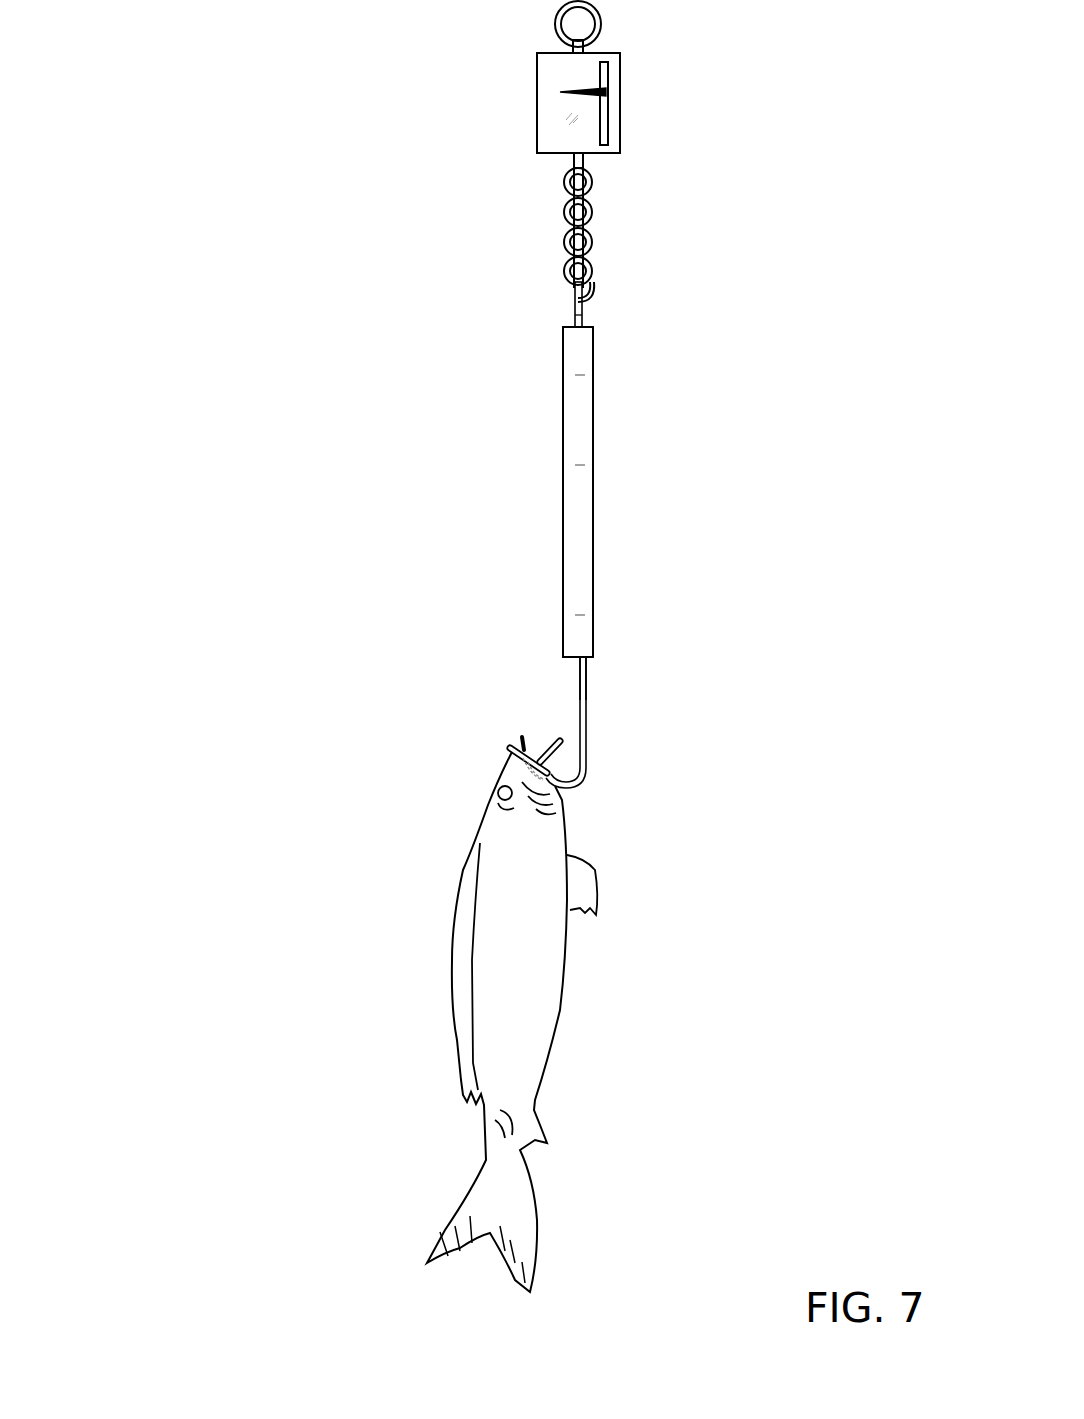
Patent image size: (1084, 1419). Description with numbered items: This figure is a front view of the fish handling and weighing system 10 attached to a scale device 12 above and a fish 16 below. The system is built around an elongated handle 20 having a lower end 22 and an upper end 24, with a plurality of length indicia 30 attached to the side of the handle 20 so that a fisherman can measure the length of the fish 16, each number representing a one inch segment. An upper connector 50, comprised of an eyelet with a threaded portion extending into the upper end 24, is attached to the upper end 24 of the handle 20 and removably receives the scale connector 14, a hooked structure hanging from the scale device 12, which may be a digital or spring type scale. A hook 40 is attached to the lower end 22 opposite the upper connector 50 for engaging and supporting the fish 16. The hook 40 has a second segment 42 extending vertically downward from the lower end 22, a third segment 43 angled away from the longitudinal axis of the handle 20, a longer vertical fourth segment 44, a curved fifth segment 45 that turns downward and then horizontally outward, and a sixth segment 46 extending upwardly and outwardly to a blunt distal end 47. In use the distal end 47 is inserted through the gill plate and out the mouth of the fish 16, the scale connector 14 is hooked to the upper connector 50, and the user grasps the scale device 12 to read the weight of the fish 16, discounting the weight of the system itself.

The fish handling and weighing system 10 is at (240, 397).
The scale device 12 is at (537, 90).
The scale connector 14 is at (566, 284).
The fish 16 is at (553, 992).
The handle 20 is at (563, 438).
The lower end 22 is at (590, 660).
The upper end 24 is at (572, 325).
The length indicia 30 is at (580, 420).
The hook 40 is at (583, 705).
The second segment 42 is at (578, 664).
The third segment 43 is at (578, 686).
The fourth segment 44 is at (587, 724).
The fifth segment 45 is at (584, 778).
The sixth segment 46 is at (516, 745).
The distal end 47 is at (521, 742).
The upper connector 50 is at (586, 308).